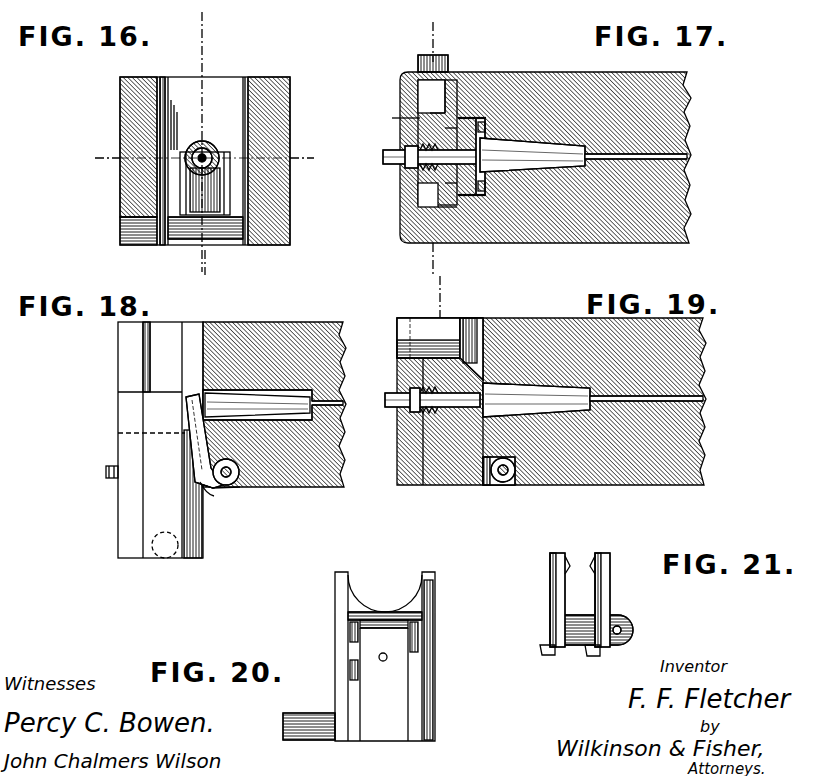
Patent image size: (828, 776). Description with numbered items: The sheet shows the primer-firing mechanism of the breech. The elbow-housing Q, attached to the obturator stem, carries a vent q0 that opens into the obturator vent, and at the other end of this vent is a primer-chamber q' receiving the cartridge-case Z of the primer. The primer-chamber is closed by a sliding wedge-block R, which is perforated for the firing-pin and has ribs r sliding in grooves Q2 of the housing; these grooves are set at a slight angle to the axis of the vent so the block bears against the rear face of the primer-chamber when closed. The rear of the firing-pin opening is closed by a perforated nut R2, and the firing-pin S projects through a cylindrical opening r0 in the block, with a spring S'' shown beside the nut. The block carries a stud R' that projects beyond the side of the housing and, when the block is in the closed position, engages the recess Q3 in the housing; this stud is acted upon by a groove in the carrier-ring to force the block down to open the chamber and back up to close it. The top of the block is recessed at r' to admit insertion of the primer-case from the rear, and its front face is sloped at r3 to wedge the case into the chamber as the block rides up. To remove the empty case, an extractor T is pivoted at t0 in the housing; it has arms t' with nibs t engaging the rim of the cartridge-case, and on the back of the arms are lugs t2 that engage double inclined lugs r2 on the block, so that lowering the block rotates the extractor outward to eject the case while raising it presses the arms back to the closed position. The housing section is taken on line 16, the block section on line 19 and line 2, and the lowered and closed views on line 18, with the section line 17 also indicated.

In FIG. 16, the elbow-housing Q is at (120, 106).
In FIG. 17, the elbow-housing Q is at (688, 200).
In FIG. 18, the elbow-housing Q is at (326, 332).
In FIG. 19, the elbow-housing Q is at (696, 342).
In FIG. 16, the grooves Q2 is at (250, 100).
In FIG. 17, the grooves Q2 is at (440, 110).
In FIG. 18, the grooves Q2 is at (163, 340).
In FIG. 19, the grooves Q2 is at (470, 330).
In FIG. 16, the recess Q3 is at (124, 229).
In FIG. 16, the primer-chamber q' is at (212, 108).
In FIG. 18, the primer-chamber q' is at (273, 356).
In FIG. 19, the primer-chamber q' is at (541, 345).
In FIG. 16, the vent q0 is at (210, 152).
In FIG. 17, the vent q0 is at (690, 157).
In FIG. 18, the vent q0 is at (344, 400).
In FIG. 19, the vent q0 is at (704, 398).
In FIG. 17, the sliding wedge-block R is at (403, 143).
In FIG. 18, the sliding wedge-block R is at (155, 462).
In FIG. 19, the sliding wedge-block R is at (417, 421).
In FIG. 20, the sliding wedge-block R is at (365, 656).
In FIG. 17, the stud R' is at (411, 48).
In FIG. 18, the stud R' is at (180, 564).
In FIG. 19, the stud R' is at (434, 419).
In FIG. 20, the stud R' is at (309, 743).
In FIG. 17, the perforated nut R2 is at (406, 150).
In FIG. 19, the perforated nut R2 is at (398, 410).
In FIG. 17, the ribs r is at (479, 156).
In FIG. 18, the ribs r is at (175, 440).
In FIG. 20, the ribs r is at (383, 660).
In FIG. 19, the recess r' is at (417, 313).
In FIG. 20, the recess r' is at (385, 598).
In FIG. 17, the cylindrical opening r0 is at (470, 200).
In FIG. 19, the cylindrical opening r0 is at (442, 350).
In FIG. 20, the cylindrical opening r0 is at (387, 660).
In FIG. 18, the double inclined lugs r2 is at (190, 480).
In FIG. 20, the double inclined lugs r2 is at (356, 640).
In FIG. 19, the sloped front face r3 is at (497, 340).
In FIG. 17, the firing-pin S is at (416, 157).
In FIG. 18, the firing-pin S is at (92, 469).
In FIG. 19, the firing-pin S is at (418, 401).
In FIG. 17, the spring S'' is at (384, 103).
In FIG. 19, the spring S'' is at (416, 505).
In FIG. 16, the extractor T is at (220, 240).
In FIG. 18, the extractor T is at (216, 488).
In FIG. 19, the extractor T is at (491, 486).
In FIG. 21, the extractor T is at (601, 613).
In FIG. 16, the nibs t is at (206, 130).
In FIG. 21, the nibs t is at (580, 553).
In FIG. 16, the arm t' is at (205, 190).
In FIG. 17, the arm t' is at (496, 157).
In FIG. 18, the arm t' is at (157, 441).
In FIG. 21, the arm t' is at (582, 597).
In FIG. 18, the pivot t0 is at (237, 480).
In FIG. 19, the pivot t0 is at (512, 480).
In FIG. 21, the pivot t0 is at (622, 630).
In FIG. 18, the lugs t2 is at (205, 492).
In FIG. 21, the lugs t2 is at (550, 646).
In FIG. 17, the cartridge-case of the primer Z is at (536, 150).
In FIG. 19, the cartridge-case of the primer Z is at (556, 412).
In FIG. 17, the section line 16 16 is at (436, 137).
In FIG. 19, the section line 16 16 is at (440, 294).
In FIG. 16, the section line 17 is at (93, 158).
In FIG. 16, the section line 18 19 18 is at (202, 138).
In FIG. 16, the section line 19 2 19 is at (204, 289).
In FIG. 16, the section line 2 2 is at (305, 158).